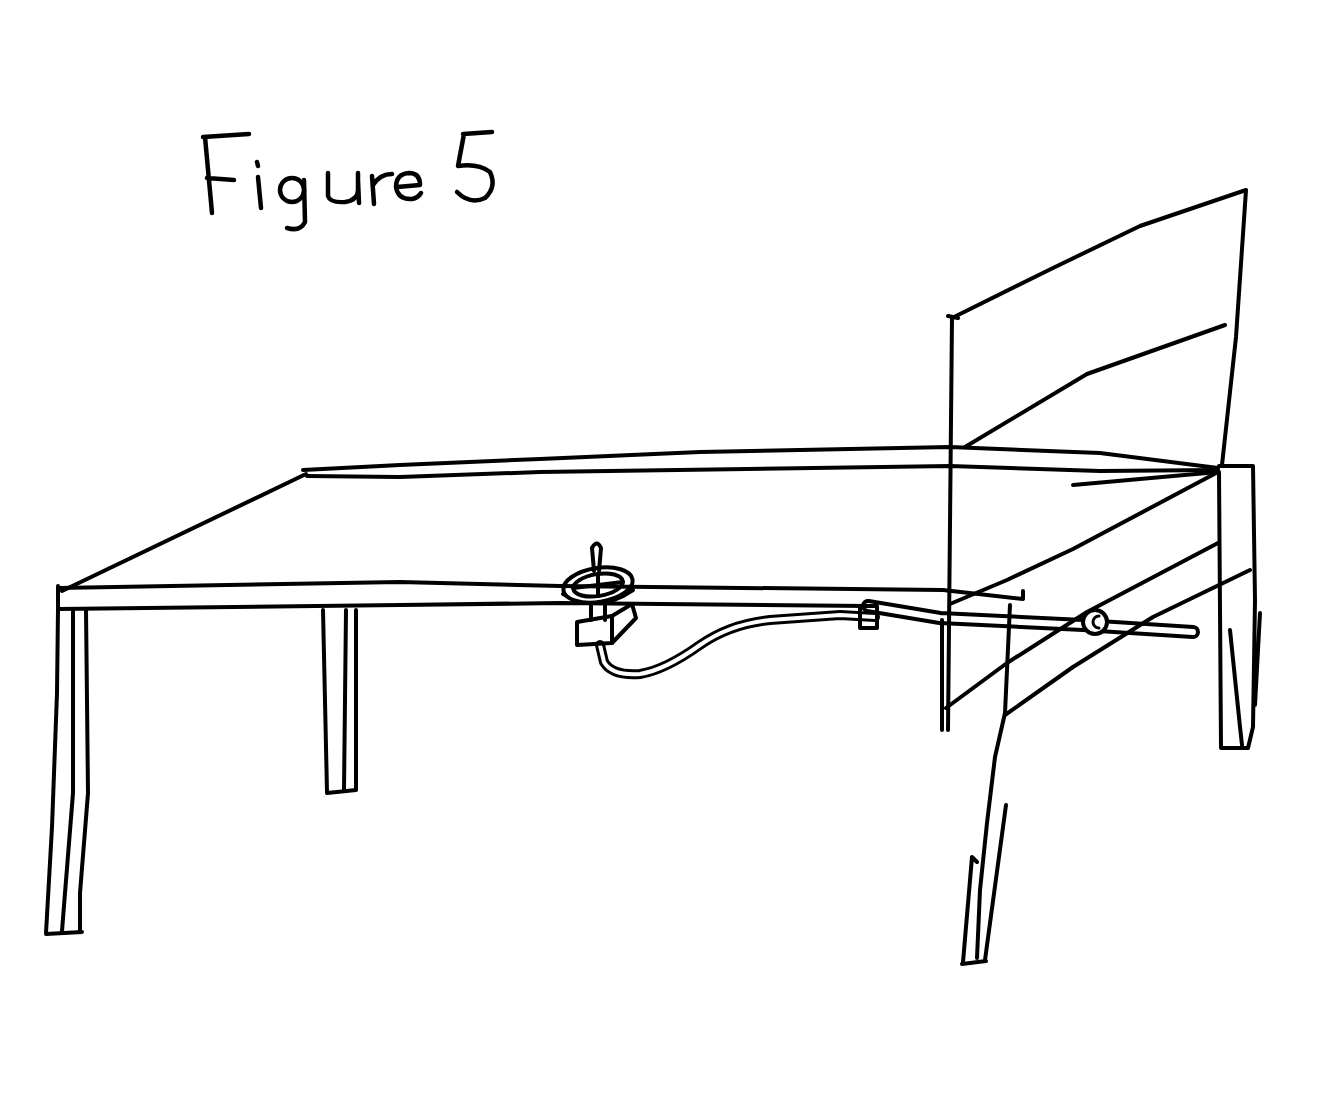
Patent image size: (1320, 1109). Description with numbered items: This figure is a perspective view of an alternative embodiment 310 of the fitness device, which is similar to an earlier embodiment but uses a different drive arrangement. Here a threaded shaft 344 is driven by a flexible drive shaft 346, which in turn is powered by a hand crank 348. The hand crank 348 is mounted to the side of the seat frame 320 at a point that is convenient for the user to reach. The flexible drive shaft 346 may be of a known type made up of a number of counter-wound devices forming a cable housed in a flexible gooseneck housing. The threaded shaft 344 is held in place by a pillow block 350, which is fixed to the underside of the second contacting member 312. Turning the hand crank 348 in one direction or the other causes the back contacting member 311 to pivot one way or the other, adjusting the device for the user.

The alternative embodiment of the fitness device 310 is at (721, 371).
The back contacting member 311 is at (950, 388).
The second contacting member 312 is at (453, 519).
The seat frame 320 is at (463, 592).
The threaded shaft 344 is at (907, 610).
The flexible drive shaft 346 is at (718, 645).
The hand crank 348 is at (628, 571).
The pillow block 350 is at (867, 620).